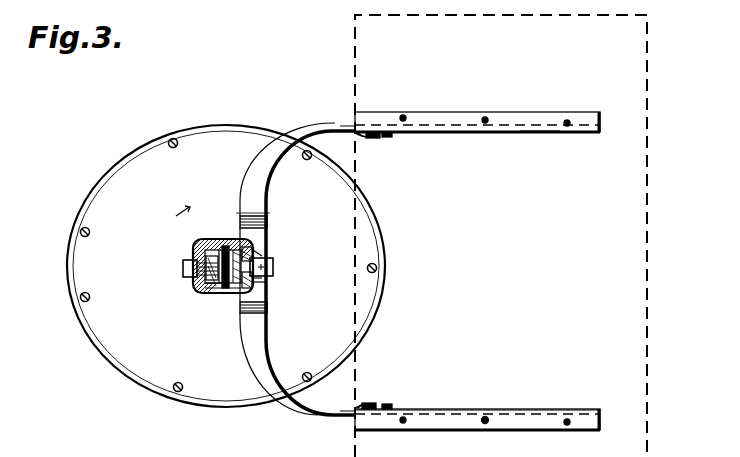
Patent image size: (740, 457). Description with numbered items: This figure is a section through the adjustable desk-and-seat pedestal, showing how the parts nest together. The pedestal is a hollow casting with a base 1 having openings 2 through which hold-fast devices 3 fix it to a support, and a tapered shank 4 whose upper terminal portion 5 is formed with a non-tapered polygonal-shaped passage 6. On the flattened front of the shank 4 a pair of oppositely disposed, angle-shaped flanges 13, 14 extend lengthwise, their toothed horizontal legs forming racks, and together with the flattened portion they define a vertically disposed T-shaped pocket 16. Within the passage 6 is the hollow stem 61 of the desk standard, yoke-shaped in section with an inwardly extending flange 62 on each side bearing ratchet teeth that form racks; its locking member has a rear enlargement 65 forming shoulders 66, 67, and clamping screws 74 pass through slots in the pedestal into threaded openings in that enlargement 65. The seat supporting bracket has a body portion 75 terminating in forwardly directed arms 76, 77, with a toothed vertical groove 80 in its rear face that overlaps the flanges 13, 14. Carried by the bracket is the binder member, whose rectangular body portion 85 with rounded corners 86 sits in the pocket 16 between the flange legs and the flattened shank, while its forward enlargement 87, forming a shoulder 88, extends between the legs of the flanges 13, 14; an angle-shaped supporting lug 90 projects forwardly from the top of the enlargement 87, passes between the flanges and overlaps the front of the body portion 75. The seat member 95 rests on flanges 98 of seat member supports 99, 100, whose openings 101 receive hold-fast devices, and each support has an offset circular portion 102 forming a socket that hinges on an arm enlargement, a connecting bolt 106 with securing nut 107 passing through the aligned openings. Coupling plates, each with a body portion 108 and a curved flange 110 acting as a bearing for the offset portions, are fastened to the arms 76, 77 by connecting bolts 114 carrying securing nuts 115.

The base 1 is at (228, 405).
The openings 2 is at (175, 148).
The hold-fast devices 3 is at (307, 160).
The shank 4 is at (183, 215).
The upper terminal portion 5 is at (210, 283).
The polygonal-shaped passage 6 is at (223, 294).
The flange 13 is at (255, 250).
The flange 14 is at (252, 290).
The T-shaped pocket 16 is at (213, 292).
The hollow stem 61 is at (226, 246).
The flange 62 is at (192, 252).
The enlargement 65 is at (205, 272).
The shoulder 66 is at (208, 238).
The shoulder 67 is at (215, 295).
The clamping screws 74 is at (183, 268).
The body portion 75 is at (256, 199).
The arm 76 is at (331, 123).
The arm 77 is at (320, 418).
The groove 80 is at (257, 282).
The body portion 85 is at (240, 294).
The rounded corners 86 is at (272, 227).
The enlargement 87 is at (255, 277).
The shoulder 88 is at (263, 256).
The angle-shaped supporting lug 90 is at (274, 268).
The seat member 95 is at (427, 15).
The flanges 98 is at (457, 118).
The seat member support 99 is at (519, 411).
The seat member support 100 is at (530, 133).
The openings 101 is at (485, 417).
The offset circular portion 102 is at (568, 126).
The connecting bolt 106 is at (379, 139).
The securing nut 107 is at (390, 139).
The body portion 108 is at (420, 124).
The curved flange 110 is at (378, 132).
The connecting bolts 114 is at (395, 136).
The securing nuts 115 is at (357, 135).